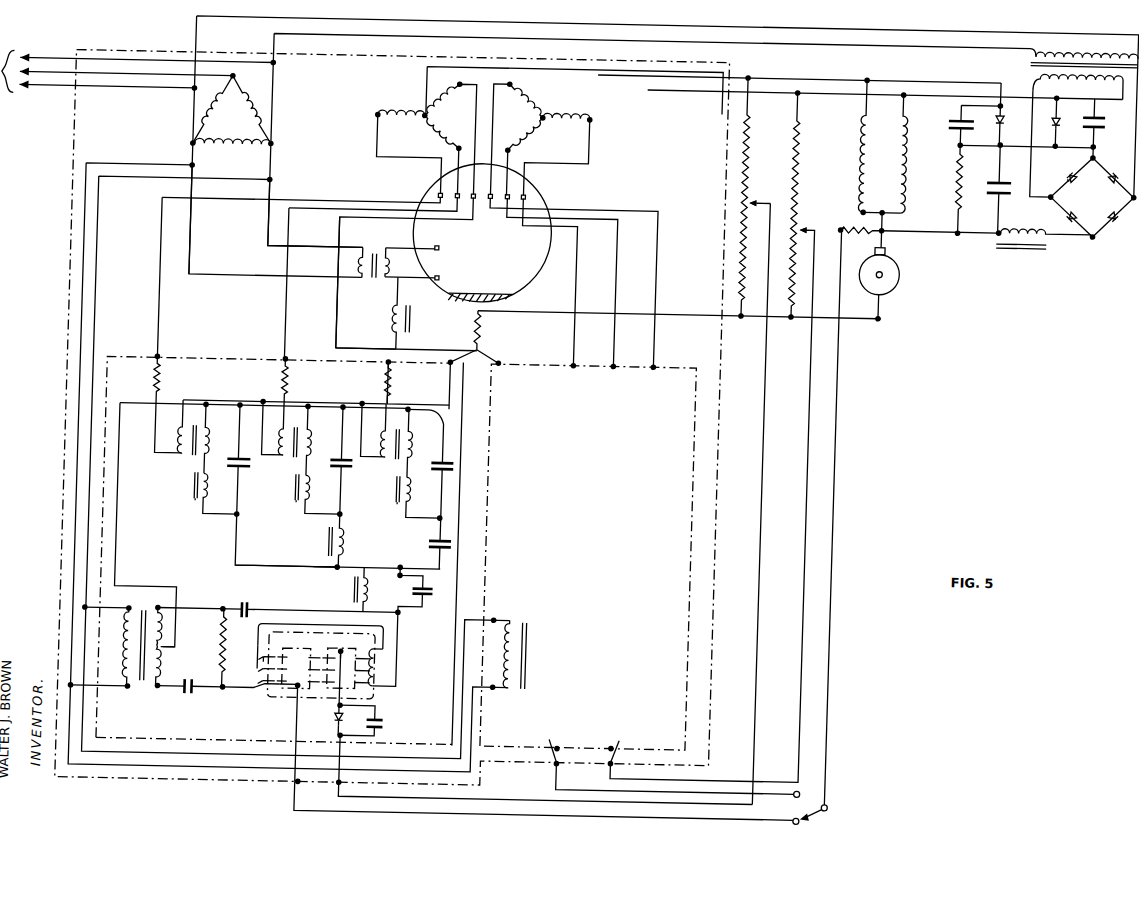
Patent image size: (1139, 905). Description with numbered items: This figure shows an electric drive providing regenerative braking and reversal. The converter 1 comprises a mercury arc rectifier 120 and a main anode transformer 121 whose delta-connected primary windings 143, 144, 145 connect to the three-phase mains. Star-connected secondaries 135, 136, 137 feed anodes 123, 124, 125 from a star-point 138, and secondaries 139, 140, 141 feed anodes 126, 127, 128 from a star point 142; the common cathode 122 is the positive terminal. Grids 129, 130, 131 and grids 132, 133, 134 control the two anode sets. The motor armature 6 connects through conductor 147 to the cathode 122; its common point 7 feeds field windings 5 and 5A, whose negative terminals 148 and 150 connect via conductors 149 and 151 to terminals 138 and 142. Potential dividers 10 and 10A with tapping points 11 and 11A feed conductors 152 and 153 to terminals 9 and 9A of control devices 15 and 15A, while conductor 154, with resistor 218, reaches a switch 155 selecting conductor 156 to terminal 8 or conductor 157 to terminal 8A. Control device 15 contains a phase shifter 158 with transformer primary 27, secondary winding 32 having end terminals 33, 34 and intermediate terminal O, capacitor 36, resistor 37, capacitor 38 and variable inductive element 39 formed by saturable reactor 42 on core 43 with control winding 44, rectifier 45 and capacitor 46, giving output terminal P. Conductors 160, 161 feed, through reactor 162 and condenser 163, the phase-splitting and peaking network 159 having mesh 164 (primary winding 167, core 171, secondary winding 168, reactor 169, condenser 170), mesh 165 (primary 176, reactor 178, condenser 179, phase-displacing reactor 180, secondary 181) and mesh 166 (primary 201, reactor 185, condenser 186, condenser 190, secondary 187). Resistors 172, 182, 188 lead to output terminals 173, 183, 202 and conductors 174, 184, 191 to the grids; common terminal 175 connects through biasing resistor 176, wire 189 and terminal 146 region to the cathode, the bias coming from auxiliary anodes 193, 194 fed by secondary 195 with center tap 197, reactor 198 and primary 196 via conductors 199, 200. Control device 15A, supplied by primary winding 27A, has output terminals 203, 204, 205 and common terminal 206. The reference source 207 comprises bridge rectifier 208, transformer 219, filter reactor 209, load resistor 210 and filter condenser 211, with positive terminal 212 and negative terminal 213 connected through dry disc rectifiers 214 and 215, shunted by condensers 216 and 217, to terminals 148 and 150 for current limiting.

The converter 1 is at (310, 43).
The main anode transformer 121 is at (337, 98).
The primary winding 143 is at (252, 141).
The primary winding 144 is at (248, 84).
The primary winding 145 is at (213, 104).
The conductor 199 is at (201, 243).
The conductor 200 is at (275, 230).
The secondary winding 135 is at (408, 152).
The secondary winding 136 is at (446, 92).
The secondary winding 137 is at (444, 124).
The star-point 138 is at (426, 104).
The secondary winding 139 is at (556, 155).
The secondary winding 140 is at (531, 130).
The secondary winding 141 is at (525, 93).
The star point 142 is at (548, 105).
The conductor 149 is at (660, 65).
The conductor 151 is at (709, 78).
The mercury arc rectifier 120 is at (514, 254).
The common cathode 122 is at (497, 284).
The anode 123 is at (442, 187).
The anode 124 is at (460, 184).
The anode 125 is at (477, 183).
The anode 126 is at (499, 183).
The anode 127 is at (516, 183).
The anode 128 is at (533, 186).
The control grid 129 is at (446, 200).
The grid 130 is at (463, 200).
The grid 131 is at (480, 200).
The grid 132 is at (498, 200).
The grid 133 is at (516, 200).
The grid 134 is at (531, 200).
The auxiliary anode 193 is at (447, 239).
The auxiliary anode 194 is at (448, 269).
The secondary 195 is at (373, 268).
The center tap 197 is at (394, 246).
The reactor 198 is at (420, 310).
The primary 196 is at (352, 305).
The conductor 189 is at (480, 340).
The biasing resistor 176 is at (491, 321).
The output terminal 175 is at (458, 355).
The common output terminal 206 is at (512, 352).
The conductor 147 is at (577, 300).
The control device 15 is at (258, 384).
The conductor 160 is at (134, 520).
The conductor 174 is at (170, 308).
The conductor 184 is at (294, 316).
The conductor 191 is at (345, 318).
The output terminal 173 is at (170, 352).
The output terminal 183 is at (294, 352).
The output terminal 202 is at (392, 357).
The limiting resistor 172 is at (172, 378).
The resistor 182 is at (300, 378).
The resistor 188 is at (402, 379).
The secondary winding 168 is at (189, 430).
The core 171 is at (206, 448).
The primary winding 167 is at (223, 432).
The mesh 164 is at (249, 505).
The reactor 169 is at (213, 500).
The condenser 170 is at (255, 465).
The secondary 181 is at (306, 448).
The mesh 165 is at (350, 505).
The reactor 178 is at (312, 500).
The condenser 179 is at (358, 466).
The phase-displacing reactor 180 is at (360, 538).
The phase-splitting and peaking network 159 is at (285, 549).
The conductor 161 is at (330, 559).
The secondary 187 is at (380, 431).
The primary 201 is at (427, 427).
The mesh 166 is at (453, 505).
The reactor 185 is at (414, 502).
The condenser 186 is at (462, 464).
The condenser 190 is at (448, 536).
The reactor 162 is at (372, 589).
The condenser 163 is at (443, 596).
The output terminal P is at (392, 647).
The transformer primary 27 is at (144, 650).
The end terminal 33 is at (176, 606).
The secondary winding 32 is at (182, 658).
The intermediate terminal O is at (173, 646).
The end terminal 34 is at (176, 684).
The capacitor 38 is at (268, 600).
The capacitor 36 is at (212, 690).
The resistor 37 is at (238, 637).
The phase shifter 158 is at (272, 633).
The three-legged magnetic core 43 is at (350, 626).
The control winding 44 is at (317, 666).
The saturable reactor 42 is at (315, 715).
The variable inductive element 39 is at (278, 661).
The dry disc rectifier 45 is at (355, 713).
The capacitor 46 is at (406, 714).
The control terminal 9 is at (360, 781).
The control terminal 8 is at (318, 781).
The conductor 156 is at (616, 808).
The control device 15A is at (622, 387).
The output terminal 203 is at (586, 353).
The output terminal 204 is at (626, 353).
The output terminal 205 is at (666, 353).
The primary winding 27A is at (547, 645).
The control terminal 8A is at (542, 744).
The control terminal 9A is at (621, 745).
The conductor 157 is at (625, 776).
The conductor 152 is at (775, 400).
The conductor 153 is at (819, 446).
The conductor 154 is at (849, 462).
The switch 155 is at (852, 795).
The tapping point 11 is at (773, 185).
The tapping point 11A is at (818, 212).
The potential divider 10 is at (753, 135).
The potential divider 10A is at (804, 138).
The negative terminal 148 is at (871, 62).
The negative terminal 150 is at (907, 76).
The field winding 5 is at (862, 148).
The field winding 5A is at (912, 143).
The common point 7 is at (892, 198).
The resistor 218 is at (858, 210).
The motor armature 6 is at (908, 250).
The terminal 146 is at (890, 303).
The positive terminal 212 is at (963, 212).
The load resistor 210 is at (961, 168).
The condenser 216 is at (957, 101).
The negative terminal 213 is at (962, 125).
The dry disc rectifier 214 is at (1006, 95).
The filter condenser 211 is at (1008, 176).
The filter reactor 209 is at (1042, 230).
The transformer 219 is at (1104, 62).
The dry disc rectifier 215 is at (1063, 103).
The condenser 217 is at (1104, 102).
The bridge rectifier 208 is at (1092, 197).
The source of reference voltage 207 is at (1073, 156).